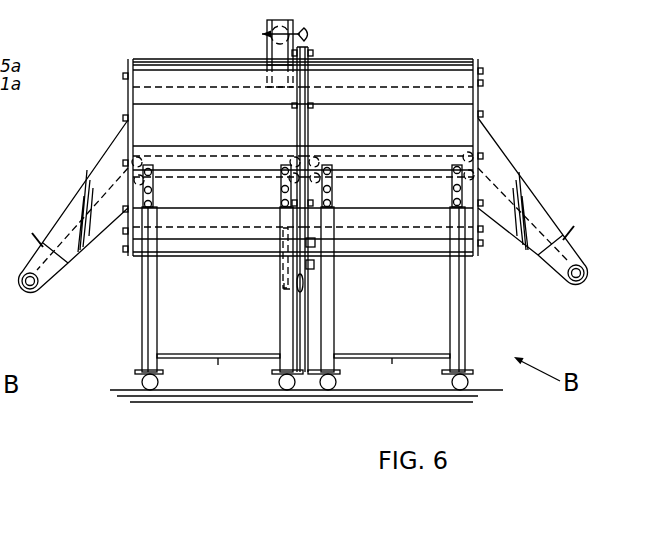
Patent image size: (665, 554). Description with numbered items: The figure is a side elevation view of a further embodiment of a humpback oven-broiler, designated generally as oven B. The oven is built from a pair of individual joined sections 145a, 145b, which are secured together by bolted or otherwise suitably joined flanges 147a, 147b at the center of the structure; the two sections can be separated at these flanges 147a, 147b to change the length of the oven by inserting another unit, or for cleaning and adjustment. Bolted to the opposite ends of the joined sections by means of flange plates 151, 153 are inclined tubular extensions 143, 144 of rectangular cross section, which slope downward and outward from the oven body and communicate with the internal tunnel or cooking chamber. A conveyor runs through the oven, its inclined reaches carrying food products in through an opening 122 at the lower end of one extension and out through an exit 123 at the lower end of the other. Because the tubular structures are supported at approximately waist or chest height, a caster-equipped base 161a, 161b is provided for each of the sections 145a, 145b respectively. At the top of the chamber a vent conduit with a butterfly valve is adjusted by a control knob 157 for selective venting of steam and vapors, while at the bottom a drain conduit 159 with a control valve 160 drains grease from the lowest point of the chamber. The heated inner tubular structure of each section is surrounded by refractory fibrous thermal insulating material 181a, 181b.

The opening 122 is at (40, 238).
The exit 123 is at (570, 233).
The inclined tubular extension 143 is at (100, 157).
The inclined tubular extension 144 is at (533, 180).
The joined section 145a is at (197, 51).
The joined section 145b is at (365, 48).
The flange 147a is at (297, 119).
The flange 147b is at (309, 117).
The flange plate 151 is at (128, 68).
The flange plate 153 is at (480, 92).
The control knob 157 is at (307, 33).
The drain conduit 159 is at (282, 271).
The control valve 160 is at (303, 280).
The caster-equipped base 161a is at (140, 322).
The caster-equipped base 161b is at (474, 305).
The fibrous thermal insulating material 181a is at (157, 60).
The fibrous thermal insulating material 181b is at (455, 58).